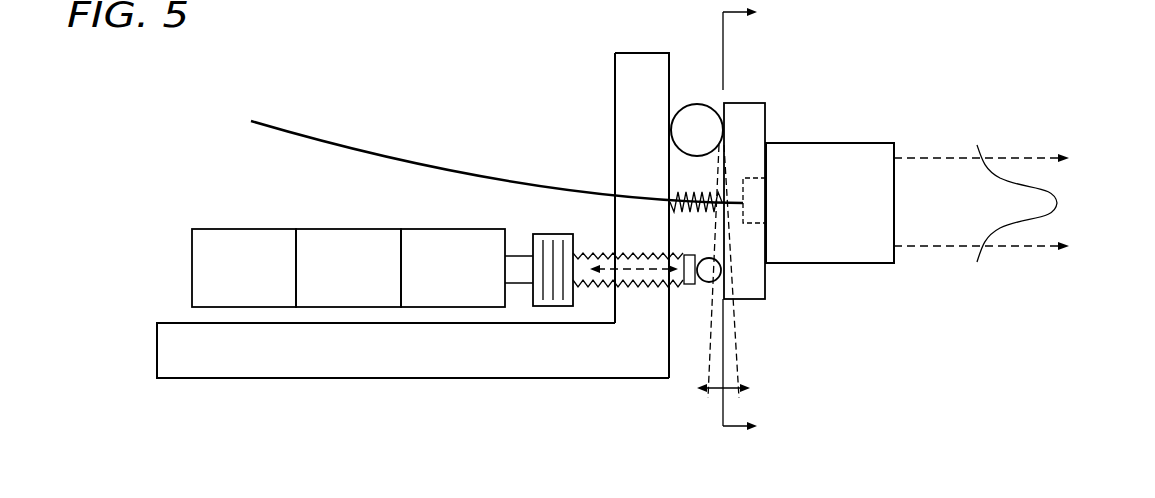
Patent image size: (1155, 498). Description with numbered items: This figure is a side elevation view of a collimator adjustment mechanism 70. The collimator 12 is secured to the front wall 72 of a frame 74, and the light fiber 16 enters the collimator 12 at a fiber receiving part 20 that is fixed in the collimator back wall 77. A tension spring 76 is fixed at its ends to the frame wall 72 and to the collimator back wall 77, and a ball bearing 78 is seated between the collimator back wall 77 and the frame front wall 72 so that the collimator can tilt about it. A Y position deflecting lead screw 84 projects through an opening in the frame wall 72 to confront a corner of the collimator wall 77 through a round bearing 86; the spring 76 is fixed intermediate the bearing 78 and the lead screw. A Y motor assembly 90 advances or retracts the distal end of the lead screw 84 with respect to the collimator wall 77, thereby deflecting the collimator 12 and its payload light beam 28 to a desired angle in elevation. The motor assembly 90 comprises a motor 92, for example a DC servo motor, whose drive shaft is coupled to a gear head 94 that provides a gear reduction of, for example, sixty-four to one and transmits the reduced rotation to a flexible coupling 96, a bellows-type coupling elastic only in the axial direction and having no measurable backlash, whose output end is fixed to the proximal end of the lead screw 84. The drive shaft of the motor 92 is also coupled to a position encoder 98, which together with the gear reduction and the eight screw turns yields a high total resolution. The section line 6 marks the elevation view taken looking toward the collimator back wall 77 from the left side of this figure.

The section line 6- 6 is at (748, 220).
The collimator 12 is at (830, 135).
The light fiber 16 is at (408, 152).
The fiber receiving part 20 is at (752, 230).
The light beam 28 is at (1057, 203).
The collimator adjustment mechanism 70 is at (573, 140).
The front wall 72 is at (622, 73).
The frame 74 is at (150, 349).
The tension spring 76 is at (680, 212).
The collimator back wall 77 is at (744, 110).
The ball bearing 78 is at (697, 108).
The Y position deflecting lead screw 84 is at (672, 283).
The round bearing 86 is at (712, 290).
The Y motor assembly 90 is at (243, 222).
The motor 92 is at (344, 229).
The gear head 94 is at (455, 233).
The flexible coupling 96 is at (553, 235).
The position encoder 98 is at (192, 265).